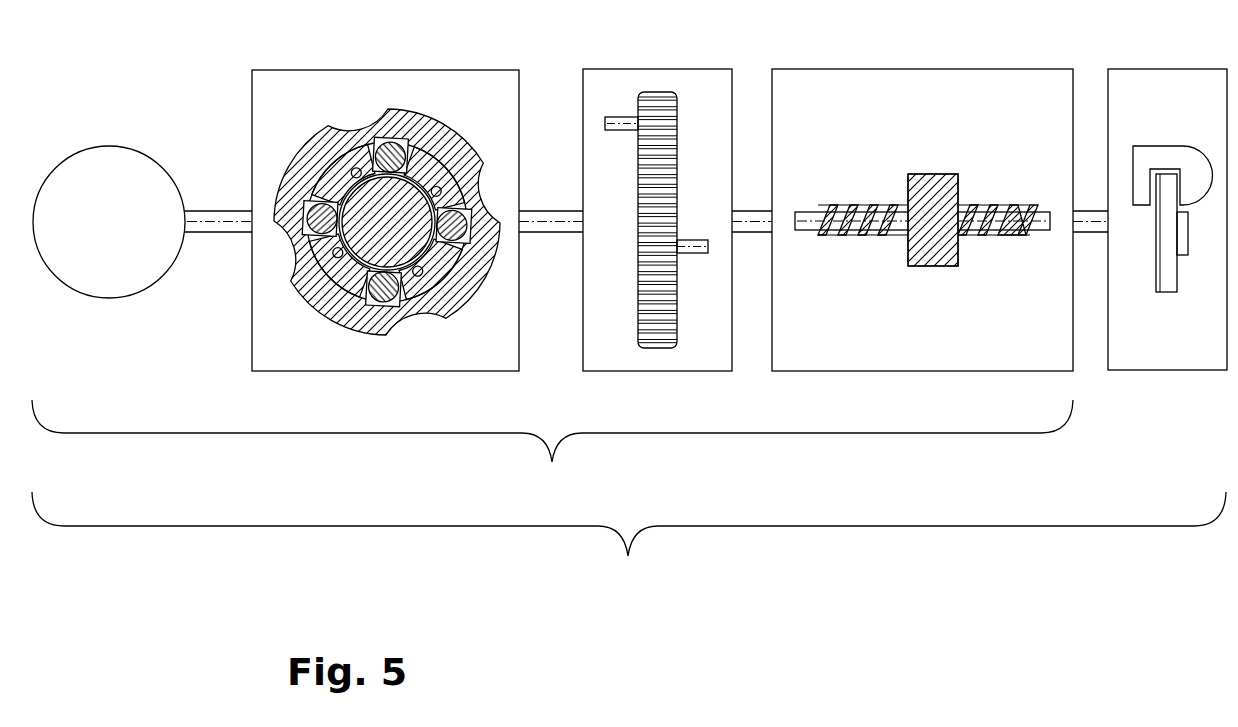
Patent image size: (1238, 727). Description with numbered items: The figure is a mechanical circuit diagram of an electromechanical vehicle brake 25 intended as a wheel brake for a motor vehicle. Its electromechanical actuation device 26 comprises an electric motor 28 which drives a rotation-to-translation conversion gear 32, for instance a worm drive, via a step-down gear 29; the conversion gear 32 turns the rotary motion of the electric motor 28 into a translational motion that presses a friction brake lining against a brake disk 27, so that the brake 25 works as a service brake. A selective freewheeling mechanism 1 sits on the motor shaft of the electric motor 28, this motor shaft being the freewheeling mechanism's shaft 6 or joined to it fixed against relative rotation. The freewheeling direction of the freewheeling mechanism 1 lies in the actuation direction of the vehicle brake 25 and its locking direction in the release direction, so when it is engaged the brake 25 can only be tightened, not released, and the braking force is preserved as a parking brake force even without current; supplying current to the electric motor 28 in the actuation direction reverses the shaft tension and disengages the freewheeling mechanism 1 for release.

The selective freewheeling mechanism 1 is at (398, 93).
The shaft 6 is at (213, 218).
The electromechanical vehicle brake 25 is at (629, 545).
The electromechanical actuation device 26 is at (552, 449).
The brake disk 27 is at (1168, 85).
The electric motor 28 is at (107, 163).
The step-down gear 29 is at (658, 82).
The rotation-to-translation conversion gear 32 is at (921, 103).